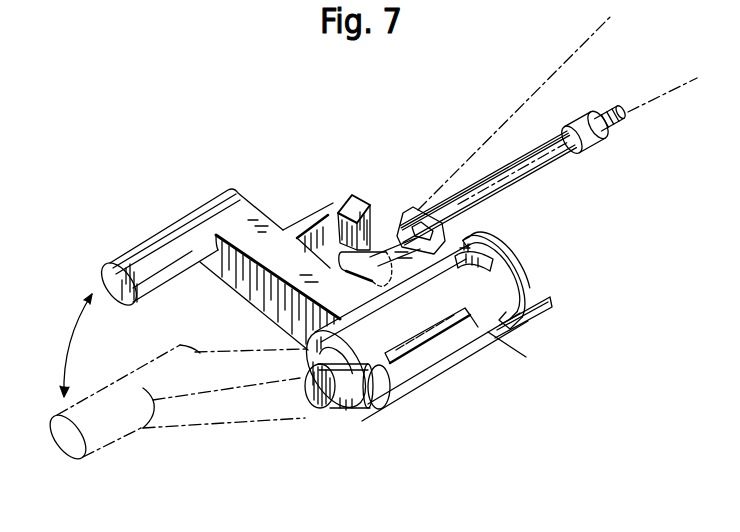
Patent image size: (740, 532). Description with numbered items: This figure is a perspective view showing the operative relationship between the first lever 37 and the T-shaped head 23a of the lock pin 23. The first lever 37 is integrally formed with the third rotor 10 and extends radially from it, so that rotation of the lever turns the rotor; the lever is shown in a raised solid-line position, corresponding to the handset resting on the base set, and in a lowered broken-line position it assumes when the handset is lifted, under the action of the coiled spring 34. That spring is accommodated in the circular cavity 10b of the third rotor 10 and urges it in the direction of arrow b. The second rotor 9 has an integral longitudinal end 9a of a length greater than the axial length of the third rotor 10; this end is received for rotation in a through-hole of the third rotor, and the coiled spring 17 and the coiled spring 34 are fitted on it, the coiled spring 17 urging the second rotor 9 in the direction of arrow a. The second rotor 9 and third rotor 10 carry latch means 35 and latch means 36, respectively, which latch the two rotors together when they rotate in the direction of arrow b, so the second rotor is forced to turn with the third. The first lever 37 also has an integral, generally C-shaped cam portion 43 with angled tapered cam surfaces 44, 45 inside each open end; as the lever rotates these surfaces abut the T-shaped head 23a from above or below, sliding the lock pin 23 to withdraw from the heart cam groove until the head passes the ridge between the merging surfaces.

The first lever 37 is at (237, 228).
The cam portion 43 is at (316, 203).
The tapered cam surface 45 is at (336, 206).
The T-shaped head 23a is at (374, 258).
The tapered cam surface 44 is at (399, 246).
The lock pin 23 is at (553, 170).
The third rotor 10 is at (435, 368).
The coiled spring 34 is at (344, 408).
The second rotor 9 is at (551, 297).
The longitudinal end 9a is at (318, 397).
The circular cavity 10b is at (390, 412).
The latch means 35 is at (492, 243).
The latch means 36 is at (547, 308).
The coiled spring 17 is at (518, 362).